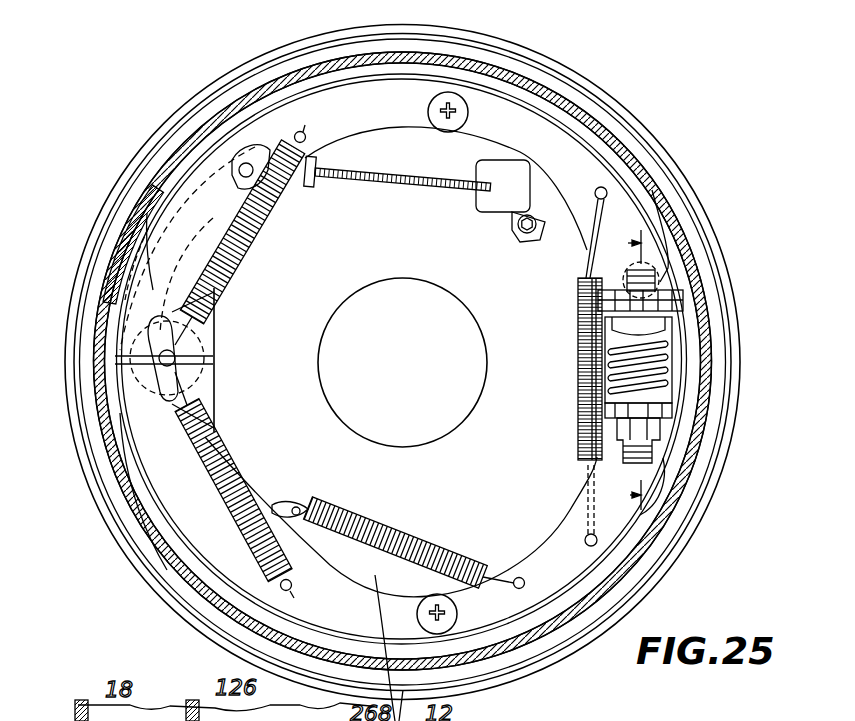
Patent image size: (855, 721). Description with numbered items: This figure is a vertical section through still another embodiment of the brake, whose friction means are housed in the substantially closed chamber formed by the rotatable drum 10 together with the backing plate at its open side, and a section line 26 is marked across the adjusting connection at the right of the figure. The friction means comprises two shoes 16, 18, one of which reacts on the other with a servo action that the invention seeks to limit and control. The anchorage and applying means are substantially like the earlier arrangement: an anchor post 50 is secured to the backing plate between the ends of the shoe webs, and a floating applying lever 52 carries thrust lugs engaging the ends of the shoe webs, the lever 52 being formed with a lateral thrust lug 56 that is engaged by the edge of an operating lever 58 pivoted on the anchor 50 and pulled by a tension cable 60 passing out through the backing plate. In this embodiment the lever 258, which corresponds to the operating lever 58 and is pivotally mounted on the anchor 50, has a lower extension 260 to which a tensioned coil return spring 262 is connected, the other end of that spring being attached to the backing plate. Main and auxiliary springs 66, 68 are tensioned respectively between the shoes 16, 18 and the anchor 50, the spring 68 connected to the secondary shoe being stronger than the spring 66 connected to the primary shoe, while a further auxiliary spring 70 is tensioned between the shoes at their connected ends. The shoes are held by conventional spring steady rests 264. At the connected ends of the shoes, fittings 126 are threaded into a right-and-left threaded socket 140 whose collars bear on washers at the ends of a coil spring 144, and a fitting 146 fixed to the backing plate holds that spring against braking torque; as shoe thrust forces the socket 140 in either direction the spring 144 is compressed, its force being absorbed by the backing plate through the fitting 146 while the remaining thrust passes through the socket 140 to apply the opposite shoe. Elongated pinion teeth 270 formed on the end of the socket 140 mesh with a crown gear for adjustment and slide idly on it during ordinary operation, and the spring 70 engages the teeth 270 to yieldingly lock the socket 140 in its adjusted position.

The rotatable drum 10 is at (527, 635).
The shoe 16 is at (545, 140).
The shoe 18 is at (568, 568).
The section line 26 is at (619, 370).
The anchor post 50 is at (158, 366).
The lever 52 is at (160, 287).
The lateral thrust lug 56 is at (213, 236).
The operating lever 58 is at (250, 196).
The tension cable 60 is at (383, 181).
The main spring 66 is at (245, 240).
The auxiliary spring 68 is at (250, 481).
The auxiliary spring 70 is at (593, 313).
The fittings 126 is at (663, 444).
The right-and-left threaded socket 140 is at (613, 301).
The coil spring 144 is at (617, 378).
The fitting 146 is at (670, 330).
The lever 258 is at (183, 208).
The lower extension 260 is at (305, 503).
The tensioned coil return spring 262 is at (383, 532).
The spring steady rests 264 is at (465, 118).
The elongated pinion teeth 270 is at (677, 293).